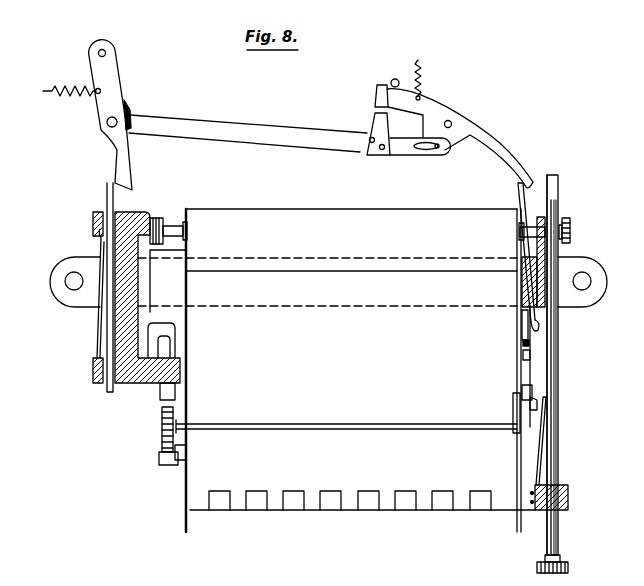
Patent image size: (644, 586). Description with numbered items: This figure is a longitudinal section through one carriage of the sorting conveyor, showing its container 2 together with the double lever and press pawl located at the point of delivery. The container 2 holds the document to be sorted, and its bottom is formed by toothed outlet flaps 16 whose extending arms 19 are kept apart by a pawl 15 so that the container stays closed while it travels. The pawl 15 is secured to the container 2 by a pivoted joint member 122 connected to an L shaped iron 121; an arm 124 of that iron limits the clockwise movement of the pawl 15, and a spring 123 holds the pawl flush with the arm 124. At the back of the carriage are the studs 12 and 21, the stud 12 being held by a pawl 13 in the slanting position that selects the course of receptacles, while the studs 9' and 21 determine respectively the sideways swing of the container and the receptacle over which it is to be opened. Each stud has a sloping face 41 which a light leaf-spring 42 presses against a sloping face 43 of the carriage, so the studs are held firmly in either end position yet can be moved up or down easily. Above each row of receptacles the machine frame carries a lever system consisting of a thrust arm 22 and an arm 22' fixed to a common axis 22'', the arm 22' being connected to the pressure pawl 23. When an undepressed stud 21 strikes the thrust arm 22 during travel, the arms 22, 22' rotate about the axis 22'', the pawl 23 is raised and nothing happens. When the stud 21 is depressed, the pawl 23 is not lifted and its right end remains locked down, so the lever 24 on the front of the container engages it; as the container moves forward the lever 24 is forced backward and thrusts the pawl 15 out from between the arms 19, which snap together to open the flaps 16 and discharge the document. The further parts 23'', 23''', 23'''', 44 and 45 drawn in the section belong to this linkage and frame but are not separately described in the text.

The container 2 is at (380, 233).
The stud 9' is at (565, 370).
The stud 12 is at (168, 392).
The pawl 13 is at (165, 430).
The pawl 15 is at (528, 367).
The outlet flaps 16 is at (313, 505).
The extending arms 19 is at (534, 398).
The stud 21 is at (107, 183).
The thrust arm 22 is at (136, 115).
The arm 22' is at (153, 92).
The common axis 22'' is at (64, 76).
The pressure pawl 23 is at (454, 133).
The block 23'' is at (361, 102).
The connecting bar 23''' is at (248, 113).
The pivot pin 23'''' is at (467, 88).
The lever 24 is at (517, 197).
The sloping face 41 is at (110, 210).
The leaf-spring 42 is at (100, 327).
The sloping face 43 is at (140, 214).
The upright bar 44 is at (538, 465).
The link 45 is at (549, 420).
The L shaped iron 121 is at (522, 351).
The pivoted joint member 122 is at (523, 341).
The spring 123 is at (522, 318).
The arm 124 is at (522, 363).